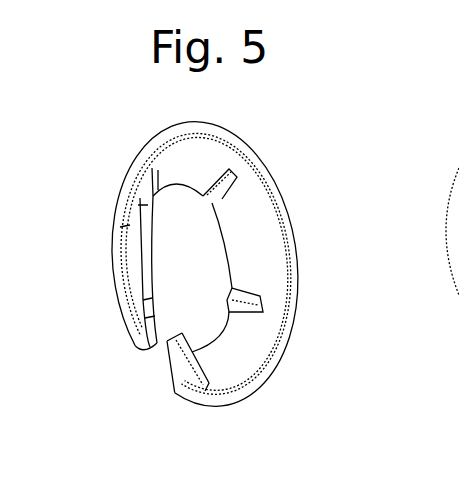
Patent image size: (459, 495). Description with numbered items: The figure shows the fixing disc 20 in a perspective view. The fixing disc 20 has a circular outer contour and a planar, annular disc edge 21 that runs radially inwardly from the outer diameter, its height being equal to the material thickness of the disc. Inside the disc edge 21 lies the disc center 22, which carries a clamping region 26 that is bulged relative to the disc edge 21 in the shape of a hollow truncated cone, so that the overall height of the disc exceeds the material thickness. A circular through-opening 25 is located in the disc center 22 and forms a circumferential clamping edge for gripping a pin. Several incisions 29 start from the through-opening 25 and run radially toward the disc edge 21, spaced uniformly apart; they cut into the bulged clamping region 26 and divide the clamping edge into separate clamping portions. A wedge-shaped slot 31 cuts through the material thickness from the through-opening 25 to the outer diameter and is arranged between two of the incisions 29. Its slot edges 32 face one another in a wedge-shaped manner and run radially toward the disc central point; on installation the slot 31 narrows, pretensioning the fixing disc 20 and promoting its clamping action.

The fixing disc 20 is at (305, 149).
The disc edge 21 is at (258, 382).
The disc center 22 is at (140, 225).
The through-opening 25 is at (163, 258).
The clamping region 26 is at (165, 160).
The incisions 29 is at (222, 197).
The slot 31 is at (136, 390).
The slot edges 32 is at (458, 402).